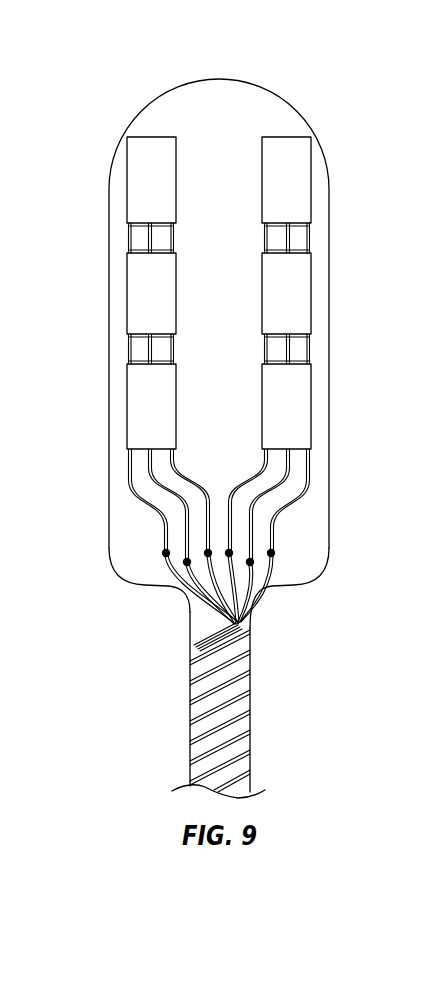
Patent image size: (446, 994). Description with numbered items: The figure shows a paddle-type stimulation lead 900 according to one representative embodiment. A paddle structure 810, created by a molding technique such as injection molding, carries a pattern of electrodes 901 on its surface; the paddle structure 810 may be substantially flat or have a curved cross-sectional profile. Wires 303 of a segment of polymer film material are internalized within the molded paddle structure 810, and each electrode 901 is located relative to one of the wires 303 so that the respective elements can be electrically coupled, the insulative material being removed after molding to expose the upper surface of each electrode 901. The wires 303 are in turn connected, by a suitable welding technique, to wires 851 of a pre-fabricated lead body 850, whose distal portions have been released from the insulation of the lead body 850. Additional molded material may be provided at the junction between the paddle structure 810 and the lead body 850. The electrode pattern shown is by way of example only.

The paddle-type stimulation lead 900 is at (118, 70).
The paddle structure 810 is at (218, 79).
The electrodes 901 is at (125, 178).
The wires 303 is at (130, 493).
The wires 851 is at (185, 590).
The lead body 850 is at (190, 712).